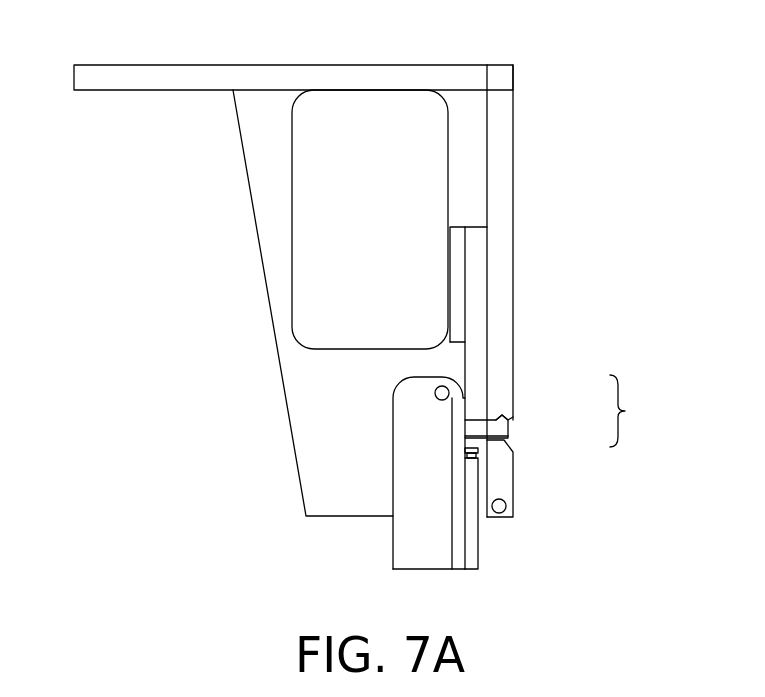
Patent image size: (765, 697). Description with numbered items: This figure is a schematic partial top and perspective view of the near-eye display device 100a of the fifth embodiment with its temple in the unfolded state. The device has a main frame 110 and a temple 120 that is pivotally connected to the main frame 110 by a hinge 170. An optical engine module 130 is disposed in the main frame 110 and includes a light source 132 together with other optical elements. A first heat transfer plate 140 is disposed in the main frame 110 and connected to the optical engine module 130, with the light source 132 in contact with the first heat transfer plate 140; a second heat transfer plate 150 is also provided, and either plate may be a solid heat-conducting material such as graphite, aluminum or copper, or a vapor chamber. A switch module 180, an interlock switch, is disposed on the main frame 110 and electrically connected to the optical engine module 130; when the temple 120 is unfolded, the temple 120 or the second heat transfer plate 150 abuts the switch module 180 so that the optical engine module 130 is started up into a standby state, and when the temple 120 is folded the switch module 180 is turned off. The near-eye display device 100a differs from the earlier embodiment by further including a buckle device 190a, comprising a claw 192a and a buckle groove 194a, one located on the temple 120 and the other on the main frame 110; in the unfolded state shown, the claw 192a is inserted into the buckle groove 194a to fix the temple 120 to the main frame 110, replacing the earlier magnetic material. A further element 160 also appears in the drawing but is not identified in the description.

The near-eye display device 100a is at (636, 607).
The main frame 110 is at (500, 155).
The temple 120 is at (418, 538).
The optical engine module 130 is at (412, 142).
The light source 132 is at (457, 249).
The first heat transfer plate 140 is at (477, 277).
The second heat transfer plate 150 is at (460, 538).
The top plate 160 is at (222, 77).
The hinge 170 is at (435, 393).
The switch module 180 is at (477, 456).
The buckle device 190a is at (643, 411).
The claw 192a is at (498, 432).
The buckle groove 194a is at (508, 422).